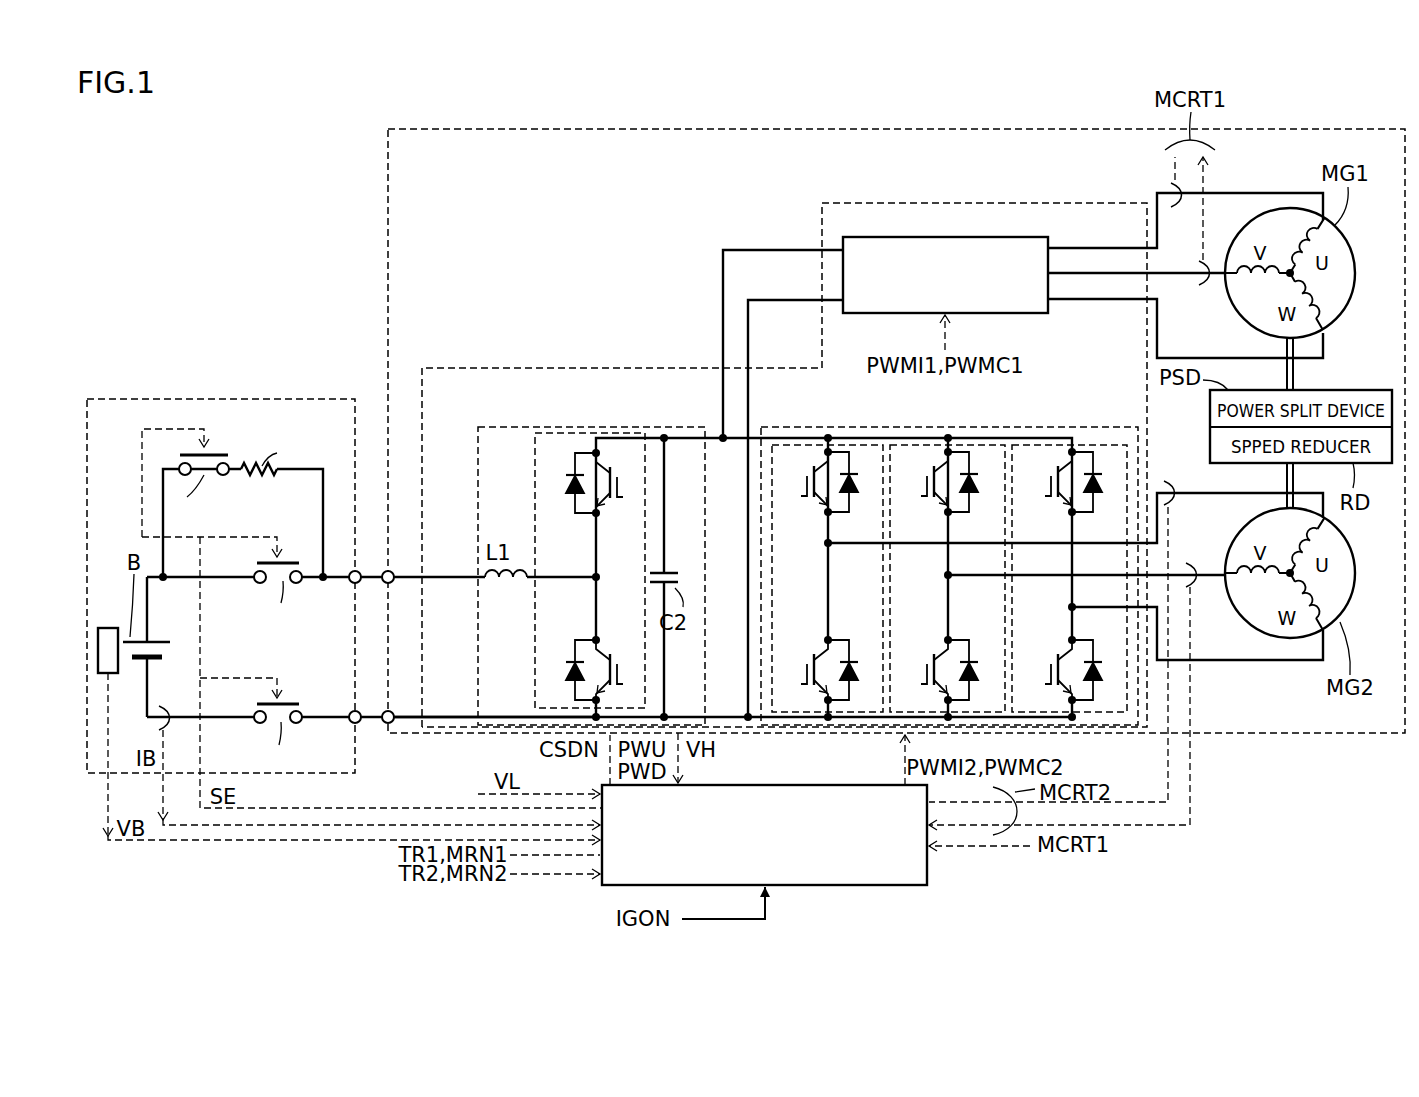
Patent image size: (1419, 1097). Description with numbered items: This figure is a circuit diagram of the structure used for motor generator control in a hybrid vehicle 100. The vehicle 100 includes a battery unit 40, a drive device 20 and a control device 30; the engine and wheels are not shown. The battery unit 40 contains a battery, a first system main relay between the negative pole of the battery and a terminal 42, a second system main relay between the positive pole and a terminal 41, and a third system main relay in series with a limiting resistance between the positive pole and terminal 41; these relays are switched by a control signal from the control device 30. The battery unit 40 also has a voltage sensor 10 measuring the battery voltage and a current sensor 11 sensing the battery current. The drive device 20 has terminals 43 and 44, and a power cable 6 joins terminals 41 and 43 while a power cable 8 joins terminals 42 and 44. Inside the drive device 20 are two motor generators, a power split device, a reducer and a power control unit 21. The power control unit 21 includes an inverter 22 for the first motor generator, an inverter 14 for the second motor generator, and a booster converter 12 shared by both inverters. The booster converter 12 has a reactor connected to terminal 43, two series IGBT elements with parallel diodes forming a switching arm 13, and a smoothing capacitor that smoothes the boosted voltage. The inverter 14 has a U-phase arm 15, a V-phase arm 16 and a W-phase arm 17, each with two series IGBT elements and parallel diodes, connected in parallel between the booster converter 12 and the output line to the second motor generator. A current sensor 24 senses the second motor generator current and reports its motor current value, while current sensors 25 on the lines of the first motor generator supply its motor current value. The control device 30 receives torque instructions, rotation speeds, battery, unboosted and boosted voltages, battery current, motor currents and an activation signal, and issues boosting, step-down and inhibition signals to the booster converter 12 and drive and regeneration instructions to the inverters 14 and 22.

The hybrid vehicle 100 is at (157, 349).
The drive device 20 is at (432, 128).
The battery unit 40 is at (253, 399).
The voltage sensor 10 is at (104, 628).
The current sensor 11 is at (164, 702).
The terminal 41 is at (351, 572).
The terminal 42 is at (351, 713).
The terminal 43 is at (390, 571).
The terminal 44 is at (386, 712).
The power cable 6 is at (370, 583).
The power cable 8 is at (370, 722).
The booster converter 12 is at (478, 459).
The switching arm of converter 13 is at (535, 490).
The inverter 14 is at (795, 427).
The U-phase arm 15 is at (863, 427).
The V-phase arm 16 is at (983, 427).
The W-phase arm 17 is at (1106, 427).
The power control unit 21 is at (820, 220).
The inverter 22 is at (1012, 237).
The current sensor 24 is at (1167, 483).
The current sensor for MG1 25 is at (1176, 213).
The control device 30 is at (870, 885).